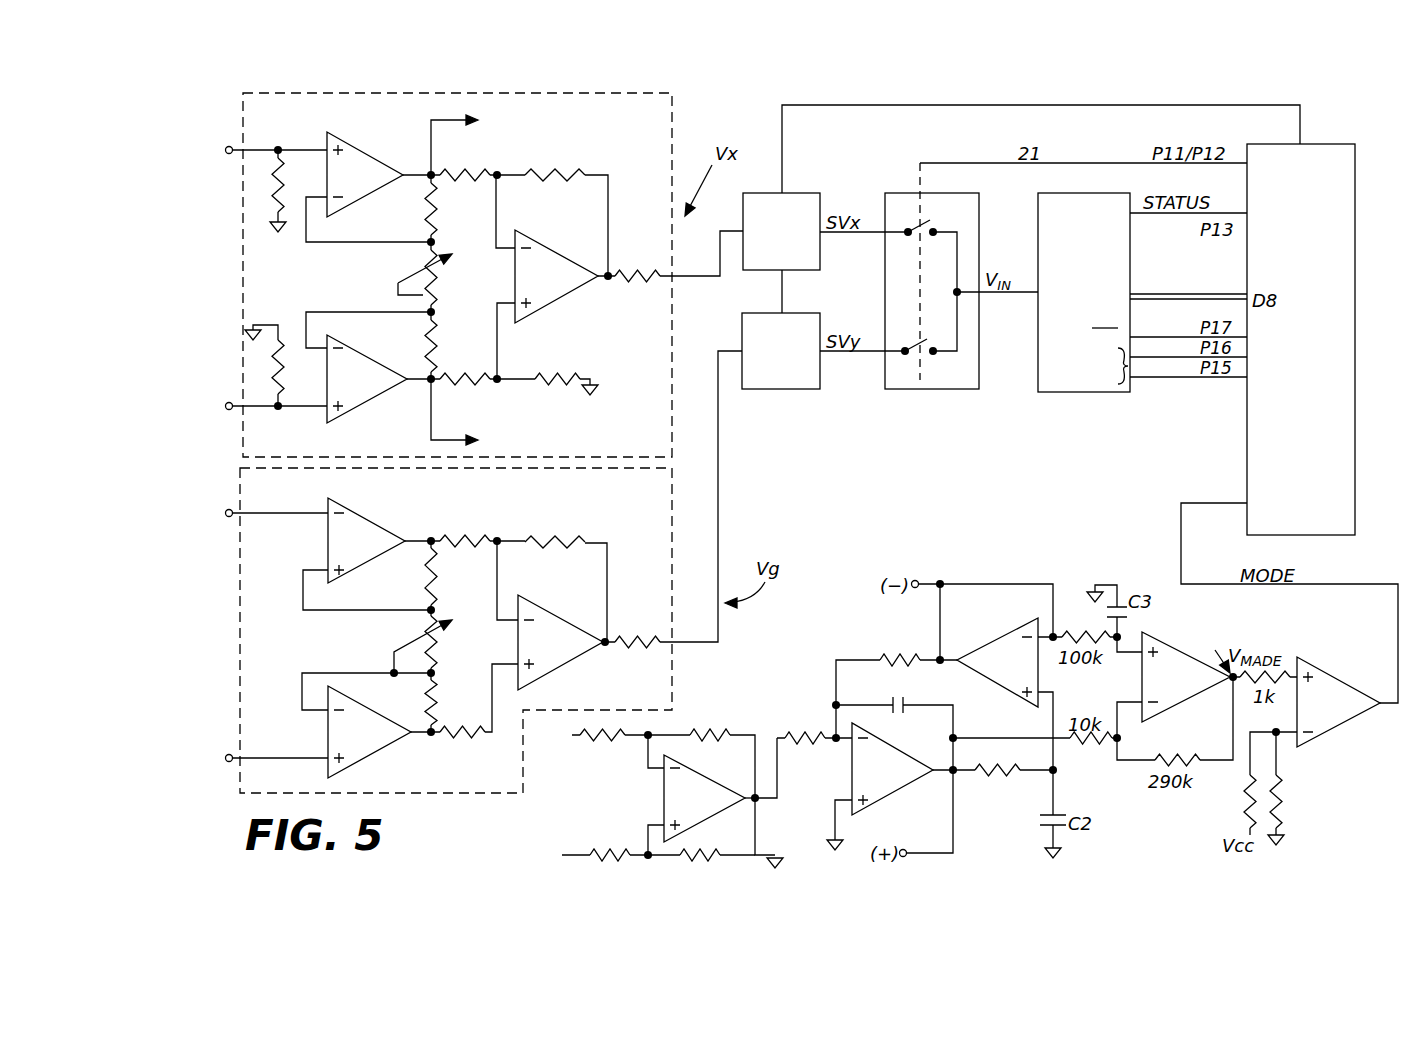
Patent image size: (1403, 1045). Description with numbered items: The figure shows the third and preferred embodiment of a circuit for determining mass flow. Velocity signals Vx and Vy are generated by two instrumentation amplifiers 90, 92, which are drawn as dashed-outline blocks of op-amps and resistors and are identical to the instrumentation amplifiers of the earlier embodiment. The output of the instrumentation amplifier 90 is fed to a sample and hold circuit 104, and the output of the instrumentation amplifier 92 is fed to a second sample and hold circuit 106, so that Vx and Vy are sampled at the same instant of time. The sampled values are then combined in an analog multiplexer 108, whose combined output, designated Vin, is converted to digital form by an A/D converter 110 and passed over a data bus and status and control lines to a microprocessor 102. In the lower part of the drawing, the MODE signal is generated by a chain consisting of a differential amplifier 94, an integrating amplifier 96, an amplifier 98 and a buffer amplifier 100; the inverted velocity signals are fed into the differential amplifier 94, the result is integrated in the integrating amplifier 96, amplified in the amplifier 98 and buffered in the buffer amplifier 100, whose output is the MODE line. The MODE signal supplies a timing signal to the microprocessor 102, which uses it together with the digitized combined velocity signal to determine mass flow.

The instrumentation amplifier 90 is at (672, 150).
The instrumentation amplifier 92 is at (700, 510).
The differential amplifier 94 is at (663, 793).
The integrating amplifier 96 is at (915, 778).
The amplifier 98 is at (1185, 645).
The buffer amplifier 100 is at (1357, 715).
The microprocessor 102 is at (1255, 443).
The sample and hold circuit 104 is at (742, 193).
The sample and hold circuit 106 is at (810, 380).
The analog multiplexer 108 is at (965, 385).
The A/D converter 110 is at (1050, 390).